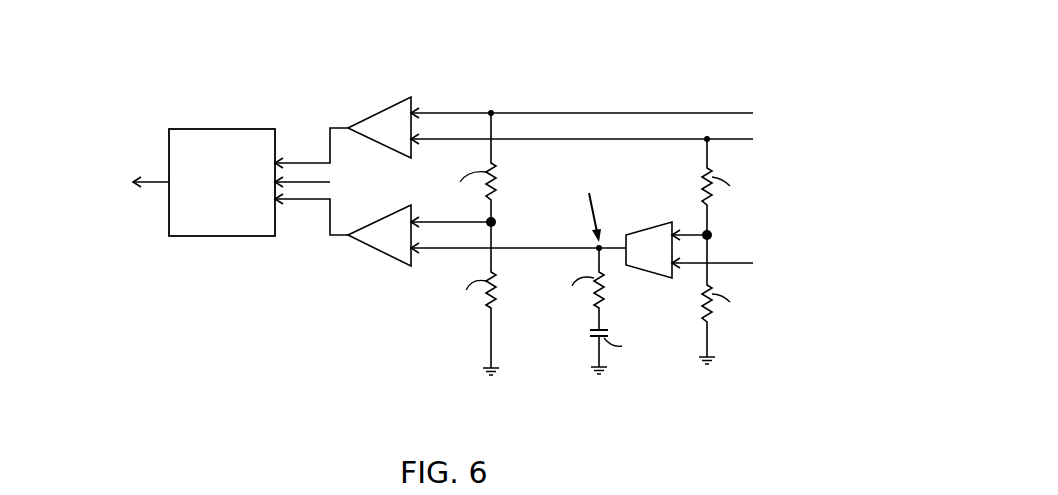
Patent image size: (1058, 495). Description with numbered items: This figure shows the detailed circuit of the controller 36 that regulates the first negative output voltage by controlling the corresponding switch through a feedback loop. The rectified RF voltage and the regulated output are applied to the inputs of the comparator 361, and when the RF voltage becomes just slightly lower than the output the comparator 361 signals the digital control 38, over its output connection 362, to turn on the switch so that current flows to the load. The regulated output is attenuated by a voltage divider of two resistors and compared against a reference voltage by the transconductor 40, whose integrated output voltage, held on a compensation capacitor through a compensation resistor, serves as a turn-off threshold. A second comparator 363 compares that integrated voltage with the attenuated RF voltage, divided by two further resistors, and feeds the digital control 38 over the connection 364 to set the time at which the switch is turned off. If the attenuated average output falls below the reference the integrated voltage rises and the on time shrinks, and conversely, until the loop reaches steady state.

The controller 36 is at (302, 306).
The digital control 38 is at (222, 182).
The transconductor 40 is at (634, 234).
The comparator 361 is at (373, 117).
The first comparator output 362 is at (313, 162).
The second comparator 363 is at (378, 250).
The second comparator output 364 is at (313, 200).